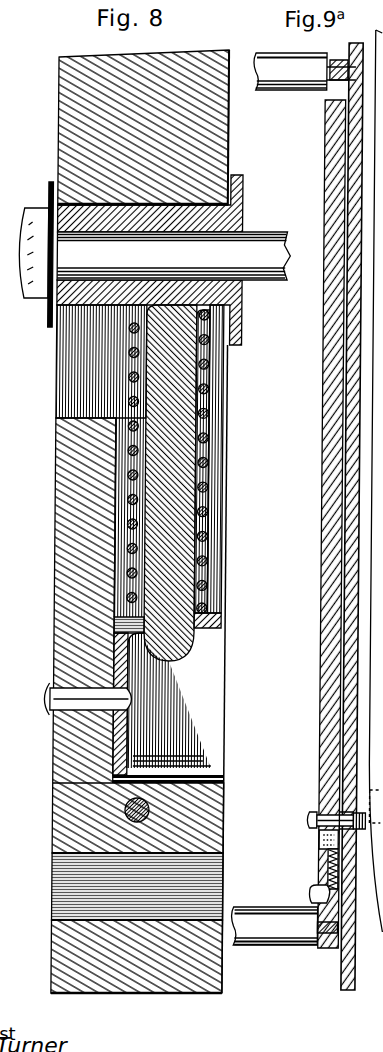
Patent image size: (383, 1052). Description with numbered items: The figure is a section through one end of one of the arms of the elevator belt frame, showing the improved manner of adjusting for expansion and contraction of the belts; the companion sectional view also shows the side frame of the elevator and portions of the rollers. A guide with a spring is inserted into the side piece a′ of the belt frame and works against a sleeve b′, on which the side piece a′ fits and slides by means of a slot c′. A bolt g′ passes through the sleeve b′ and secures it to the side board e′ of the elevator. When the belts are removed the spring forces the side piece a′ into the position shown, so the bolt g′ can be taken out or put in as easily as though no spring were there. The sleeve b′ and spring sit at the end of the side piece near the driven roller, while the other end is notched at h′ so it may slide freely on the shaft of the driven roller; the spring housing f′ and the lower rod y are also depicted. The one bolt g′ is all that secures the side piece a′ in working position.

In FIG. 8, the side piece a′ is at (221, 108).
In FIG. 9A, the side piece a′ is at (322, 403).
In FIG. 8, the sleeve b′ is at (161, 260).
In FIG. 9A, the sleeve b′ is at (344, 812).
In FIG. 8, the bolt g′ is at (155, 254).
In FIG. 9A, the bolt g′ is at (330, 817).
In FIG. 8, the slot c′ is at (100, 469).
In FIG. 9A, the slot c′ is at (325, 841).
In FIG. 8, the spring housing / spring f′ is at (209, 466).
In FIG. 9A, the spring housing / spring f′ is at (342, 875).
In FIG. 9A, the notch h′ is at (326, 93).
In FIG. 9A, the side board e′ is at (343, 549).
In FIG. 9A, the lower rod y is at (284, 934).